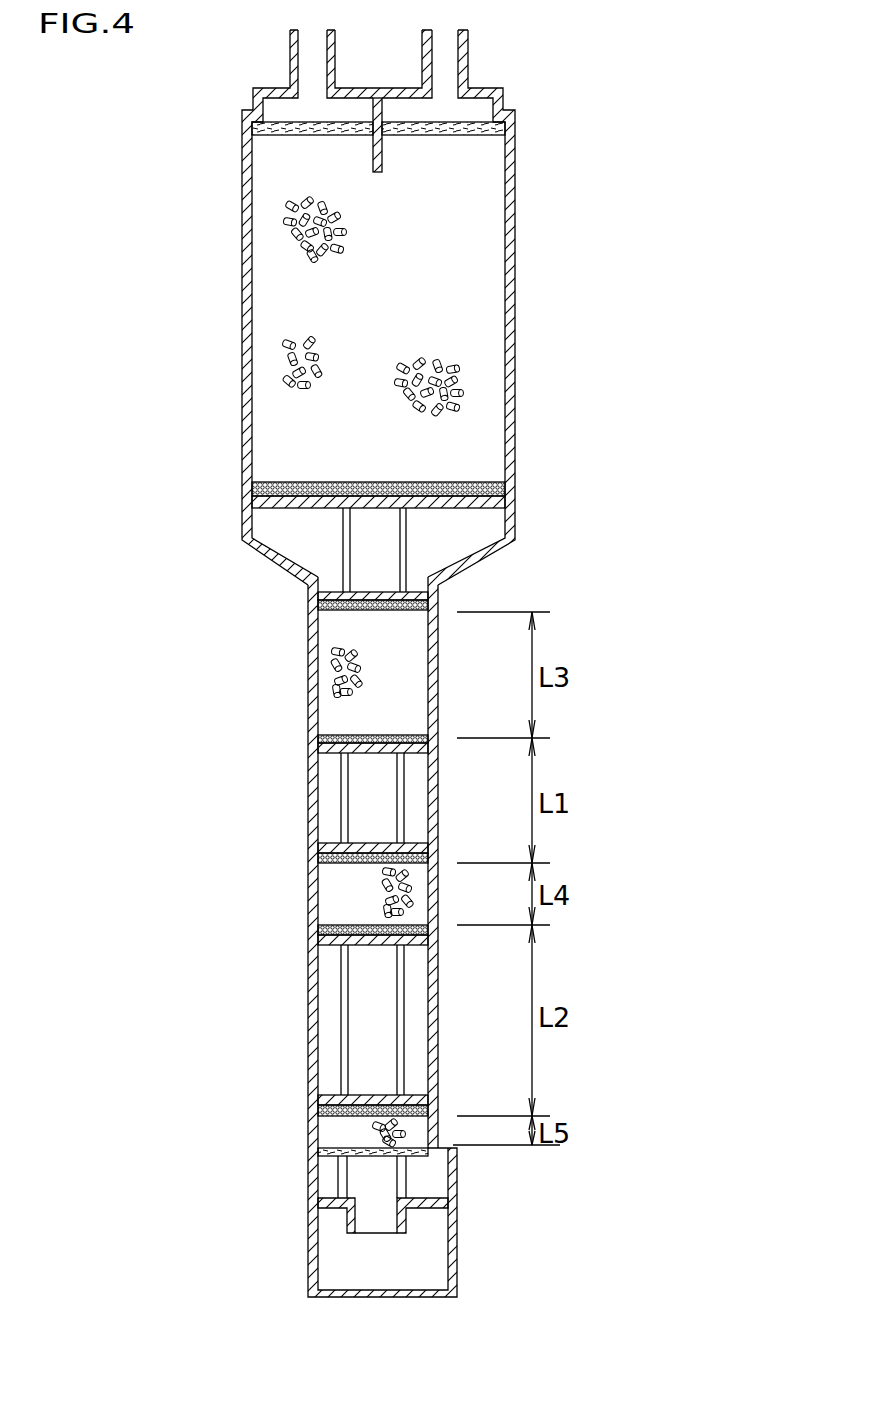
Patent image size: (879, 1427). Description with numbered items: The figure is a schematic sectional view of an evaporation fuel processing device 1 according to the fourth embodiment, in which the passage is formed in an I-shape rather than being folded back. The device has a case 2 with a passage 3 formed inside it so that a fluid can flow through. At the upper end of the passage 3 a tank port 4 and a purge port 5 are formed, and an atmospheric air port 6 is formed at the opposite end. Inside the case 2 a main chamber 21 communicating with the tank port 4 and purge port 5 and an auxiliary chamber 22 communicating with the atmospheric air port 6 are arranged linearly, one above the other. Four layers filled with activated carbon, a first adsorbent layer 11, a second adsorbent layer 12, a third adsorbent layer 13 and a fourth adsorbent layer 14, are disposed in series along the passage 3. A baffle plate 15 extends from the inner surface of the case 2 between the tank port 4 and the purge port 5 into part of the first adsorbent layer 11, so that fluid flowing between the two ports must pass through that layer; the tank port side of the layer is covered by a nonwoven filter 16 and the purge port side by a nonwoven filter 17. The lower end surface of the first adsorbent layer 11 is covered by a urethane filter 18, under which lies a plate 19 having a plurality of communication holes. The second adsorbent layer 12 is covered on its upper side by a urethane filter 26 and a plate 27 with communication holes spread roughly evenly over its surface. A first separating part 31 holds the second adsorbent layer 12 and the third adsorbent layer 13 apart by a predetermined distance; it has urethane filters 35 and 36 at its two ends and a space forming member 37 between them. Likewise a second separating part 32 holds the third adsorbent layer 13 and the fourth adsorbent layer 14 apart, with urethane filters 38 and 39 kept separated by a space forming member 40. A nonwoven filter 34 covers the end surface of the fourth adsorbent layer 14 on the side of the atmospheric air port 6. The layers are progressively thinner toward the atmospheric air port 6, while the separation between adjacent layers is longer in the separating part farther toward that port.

The evaporation fuel processing device 1 is at (242, 98).
The case 2 is at (247, 350).
The passage 3 is at (275, 305).
The tank port 4 is at (312, 53).
The purge port 5 is at (438, 50).
The atmospheric air port 6 is at (368, 1215).
The first adsorbent layer 11 is at (310, 182).
The second adsorbent layer 12 is at (333, 680).
The third adsorbent layer 13 is at (337, 903).
The fourth adsorbent layer 14 is at (325, 1128).
The baffle plate 15 is at (380, 163).
The filter 16 is at (327, 132).
The filter 17 is at (453, 132).
The filter 18 is at (342, 482).
The plate 19 is at (380, 485).
The main chamber 21 is at (272, 455).
The auxiliary chamber 22 is at (332, 1028).
The filter 26 is at (438, 597).
The plate 27 is at (330, 596).
The first separating part 31 is at (418, 823).
The second separating part 32 is at (413, 1068).
The filter 34 is at (317, 1157).
The filter 35 is at (312, 741).
The filter 36 is at (312, 858).
The space forming member 37 is at (402, 788).
The filter 38 is at (320, 935).
The filter 39 is at (320, 1108).
The space forming member 40 is at (400, 993).